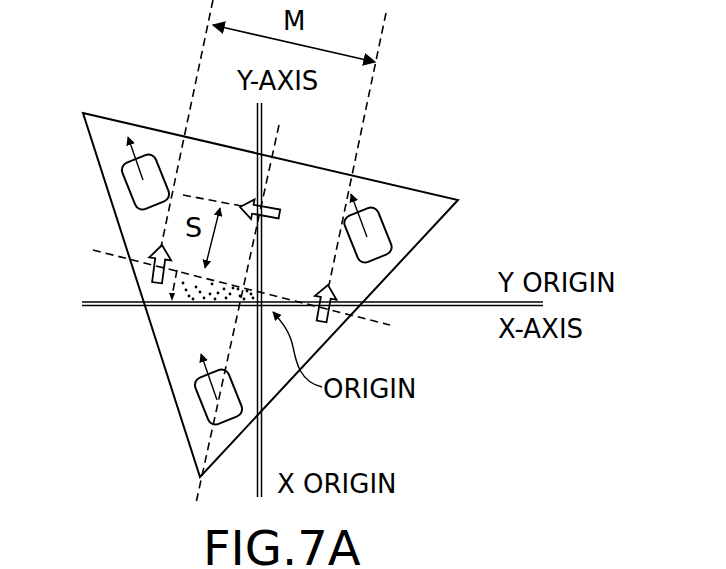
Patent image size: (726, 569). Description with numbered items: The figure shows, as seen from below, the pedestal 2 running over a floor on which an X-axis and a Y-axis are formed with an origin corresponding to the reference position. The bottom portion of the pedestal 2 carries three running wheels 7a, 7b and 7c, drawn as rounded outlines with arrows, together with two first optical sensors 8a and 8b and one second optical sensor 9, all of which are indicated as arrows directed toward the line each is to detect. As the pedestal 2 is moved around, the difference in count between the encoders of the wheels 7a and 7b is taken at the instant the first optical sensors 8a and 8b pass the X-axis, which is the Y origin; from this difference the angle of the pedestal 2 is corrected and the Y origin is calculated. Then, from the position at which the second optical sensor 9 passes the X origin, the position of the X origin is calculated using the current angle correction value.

The pedestal 2 is at (99, 163).
The running wheel 7a is at (143, 150).
The running wheel 7b is at (373, 212).
The running wheel 7c is at (200, 397).
The first optical sensor 8a is at (147, 270).
The first optical sensor 8b is at (325, 322).
The second optical sensor 9 is at (270, 207).